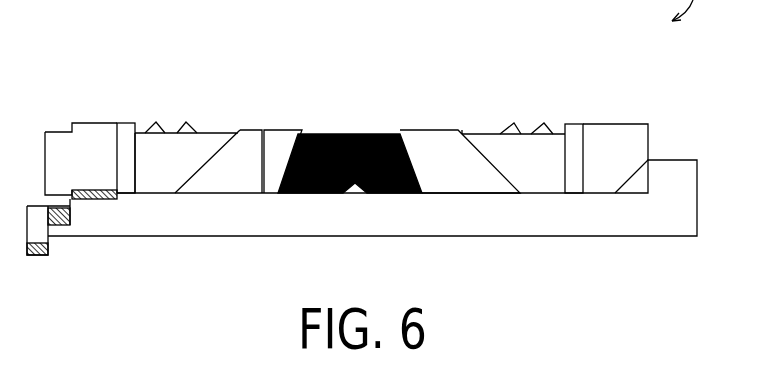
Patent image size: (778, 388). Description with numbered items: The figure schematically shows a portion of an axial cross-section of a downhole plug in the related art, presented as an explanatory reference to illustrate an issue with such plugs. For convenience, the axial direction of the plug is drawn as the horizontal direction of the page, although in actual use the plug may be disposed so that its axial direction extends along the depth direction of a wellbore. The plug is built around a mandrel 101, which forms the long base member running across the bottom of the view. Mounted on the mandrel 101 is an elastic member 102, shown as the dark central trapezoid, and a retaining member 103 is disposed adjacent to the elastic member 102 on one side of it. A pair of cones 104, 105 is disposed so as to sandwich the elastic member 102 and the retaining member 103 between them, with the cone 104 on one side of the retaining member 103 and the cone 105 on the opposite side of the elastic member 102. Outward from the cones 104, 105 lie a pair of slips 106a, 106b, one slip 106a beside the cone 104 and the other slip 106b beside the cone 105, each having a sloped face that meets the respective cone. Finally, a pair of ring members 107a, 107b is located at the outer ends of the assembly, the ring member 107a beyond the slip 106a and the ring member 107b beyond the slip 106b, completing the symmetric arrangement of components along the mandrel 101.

The mandrel 101 is at (686, 158).
The elastic member 102 is at (357, 133).
The retaining member 103 is at (275, 130).
The cone 104 is at (250, 130).
The cone 105 is at (433, 129).
The slip 106a is at (205, 132).
The slip 106b is at (490, 133).
The ring member 107a is at (124, 122).
The ring member 107b is at (576, 123).